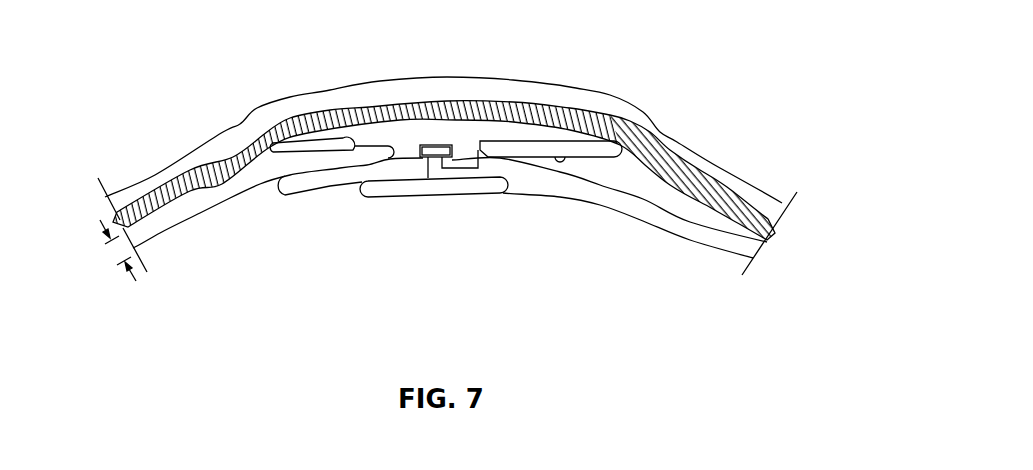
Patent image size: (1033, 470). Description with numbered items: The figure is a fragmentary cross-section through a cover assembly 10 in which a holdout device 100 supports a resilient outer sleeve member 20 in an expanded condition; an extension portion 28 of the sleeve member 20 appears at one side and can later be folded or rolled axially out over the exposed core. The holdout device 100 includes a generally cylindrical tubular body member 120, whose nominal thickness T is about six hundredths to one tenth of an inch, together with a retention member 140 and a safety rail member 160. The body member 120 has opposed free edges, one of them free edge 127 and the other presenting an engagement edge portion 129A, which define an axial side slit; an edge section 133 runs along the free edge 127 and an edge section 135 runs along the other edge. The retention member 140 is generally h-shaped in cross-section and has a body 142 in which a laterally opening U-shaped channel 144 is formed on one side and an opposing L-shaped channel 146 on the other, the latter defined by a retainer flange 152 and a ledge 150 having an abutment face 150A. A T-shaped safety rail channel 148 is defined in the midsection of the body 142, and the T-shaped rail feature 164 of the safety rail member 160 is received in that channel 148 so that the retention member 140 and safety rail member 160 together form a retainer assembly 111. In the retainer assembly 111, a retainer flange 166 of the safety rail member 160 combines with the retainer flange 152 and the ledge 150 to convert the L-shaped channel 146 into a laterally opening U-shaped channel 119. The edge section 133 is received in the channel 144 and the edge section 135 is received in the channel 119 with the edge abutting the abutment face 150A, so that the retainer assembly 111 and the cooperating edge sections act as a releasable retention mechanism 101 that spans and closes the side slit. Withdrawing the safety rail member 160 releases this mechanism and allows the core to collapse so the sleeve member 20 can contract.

The cover assembly 10 is at (730, 49).
The resilient outer sleeve member 20 is at (658, 128).
The extension portion 28 is at (187, 163).
The holdout device 100 is at (181, 310).
The releasable retention mechanism 101 is at (437, 178).
The retainer assembly 111 is at (373, 218).
The U-shaped channel 119 is at (514, 158).
The tubular body member 120 is at (183, 234).
The free edge 127 is at (421, 134).
The engagement edge portion 129A is at (483, 118).
The edge section 133 is at (365, 153).
The edge section 135 is at (501, 158).
The retention member 140 is at (462, 112).
The body 142 is at (421, 135).
The U-shaped channel 144 is at (352, 142).
The L-shaped channel 146 is at (598, 142).
The T-shaped safety rail channel 148 is at (433, 143).
The ledge 150 is at (430, 178).
The abutment face 150A is at (477, 137).
The retainer flange 152 is at (596, 150).
The safety rail member 160 is at (402, 212).
The rail feature 164 is at (427, 230).
The retainer flange 166 is at (463, 195).
The nominal thickness T is at (131, 271).